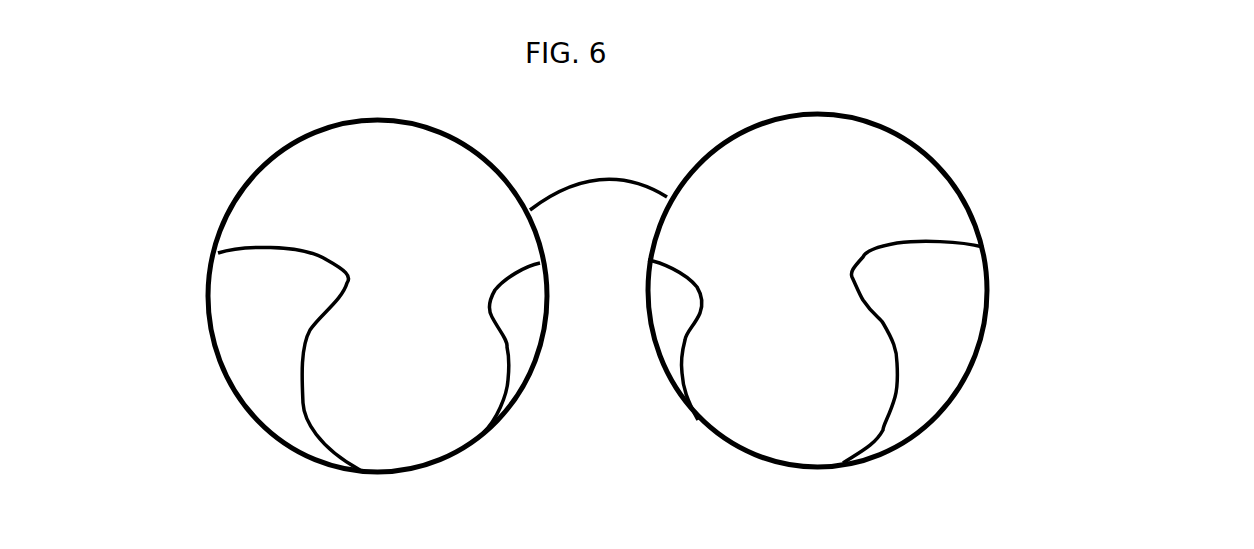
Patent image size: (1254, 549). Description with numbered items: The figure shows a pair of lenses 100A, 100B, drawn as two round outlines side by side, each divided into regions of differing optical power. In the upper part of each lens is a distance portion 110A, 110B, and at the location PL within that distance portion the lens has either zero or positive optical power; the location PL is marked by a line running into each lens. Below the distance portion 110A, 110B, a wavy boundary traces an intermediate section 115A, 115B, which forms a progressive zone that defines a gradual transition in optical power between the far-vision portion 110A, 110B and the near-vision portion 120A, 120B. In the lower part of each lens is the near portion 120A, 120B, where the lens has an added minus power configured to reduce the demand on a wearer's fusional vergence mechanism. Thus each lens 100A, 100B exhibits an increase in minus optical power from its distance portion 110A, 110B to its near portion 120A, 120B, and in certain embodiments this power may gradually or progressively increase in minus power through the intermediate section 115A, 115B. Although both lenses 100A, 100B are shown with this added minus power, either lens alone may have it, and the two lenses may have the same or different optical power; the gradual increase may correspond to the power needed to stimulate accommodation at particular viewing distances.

The location in distance portion PL is at (378, 282).
The lens 100A is at (233, 403).
The lens 100B is at (985, 290).
The distance portion 110A is at (483, 225).
The distance portion 110B is at (720, 222).
The intermediate section 115A is at (422, 322).
The intermediate section 115B is at (758, 322).
The near portion 120A is at (473, 420).
The near portion 120B is at (680, 433).